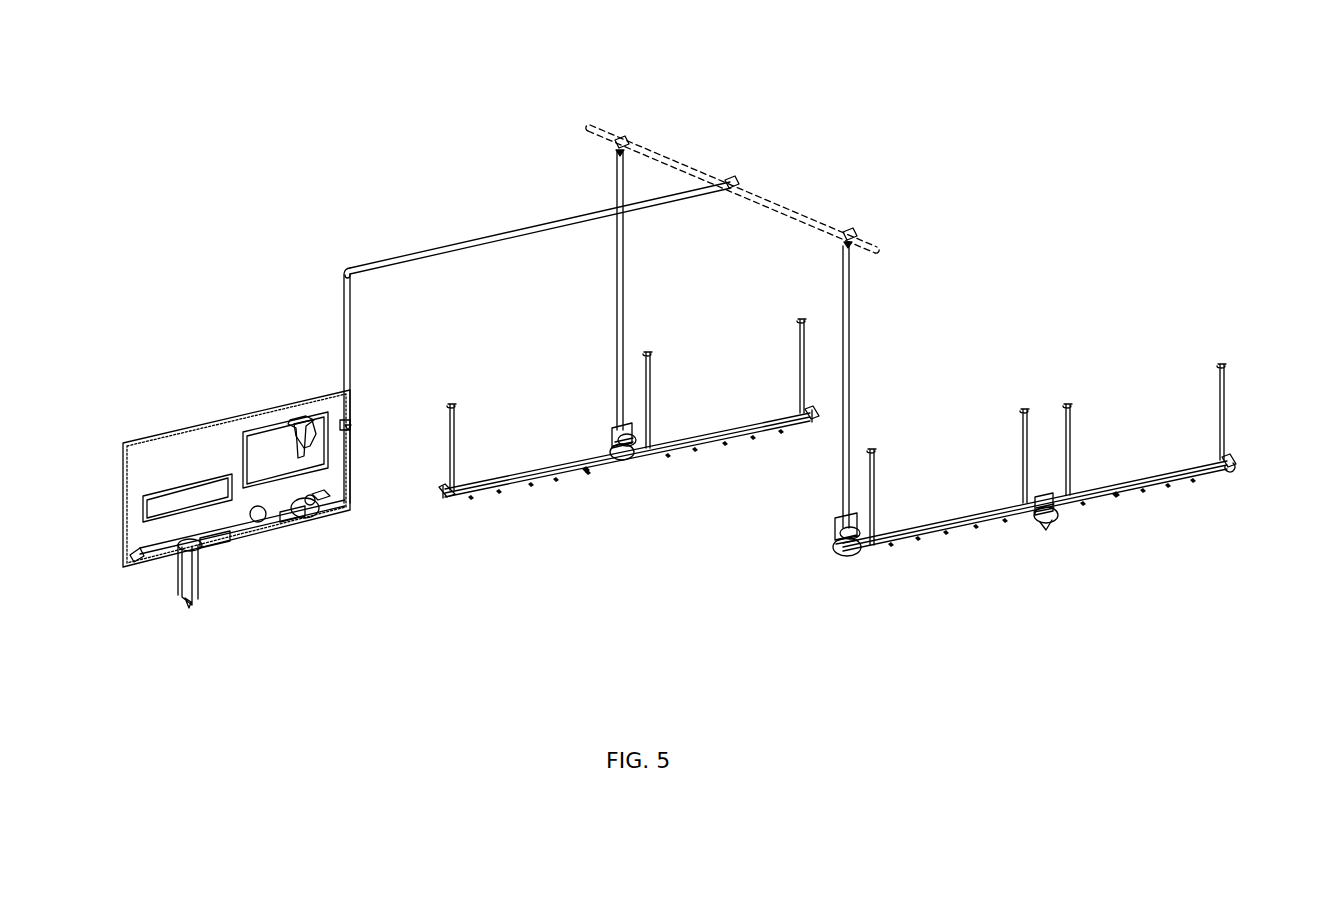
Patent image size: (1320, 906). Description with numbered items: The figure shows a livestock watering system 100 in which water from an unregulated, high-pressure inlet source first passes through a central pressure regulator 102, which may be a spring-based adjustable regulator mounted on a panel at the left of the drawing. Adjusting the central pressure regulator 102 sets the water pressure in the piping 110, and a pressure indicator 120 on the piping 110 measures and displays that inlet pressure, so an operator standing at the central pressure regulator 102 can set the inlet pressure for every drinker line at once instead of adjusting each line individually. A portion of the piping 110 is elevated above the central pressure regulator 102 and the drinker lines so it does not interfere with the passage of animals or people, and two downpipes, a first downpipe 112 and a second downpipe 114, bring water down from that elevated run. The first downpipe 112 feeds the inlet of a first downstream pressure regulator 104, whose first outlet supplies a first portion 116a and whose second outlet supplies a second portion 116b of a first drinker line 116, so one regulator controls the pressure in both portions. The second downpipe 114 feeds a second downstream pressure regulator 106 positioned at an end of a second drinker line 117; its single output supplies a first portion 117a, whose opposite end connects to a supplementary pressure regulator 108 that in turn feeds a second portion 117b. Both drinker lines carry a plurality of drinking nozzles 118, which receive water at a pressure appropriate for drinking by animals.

The livestock watering system 100 is at (226, 187).
The central pressure regulator 102 is at (307, 523).
The first downstream pressure regulator 104 is at (640, 470).
The second downstream pressure regulator 106 is at (842, 565).
The supplementary pressure regulator 108 is at (1057, 513).
The piping 110 is at (471, 242).
The first downpipe 112 is at (624, 282).
The second downpipe 114 is at (849, 302).
The first drinker line 116 is at (580, 527).
The first portion of first drinker line 116a is at (543, 481).
The second portion of first drinker line 116b is at (707, 438).
The second drinker line 117 is at (1019, 593).
The first portion of second drinker line 117a is at (933, 537).
The second portion of second drinker line 117b is at (1183, 478).
The drinking nozzles 118 is at (588, 473).
The pressure indicator 120 is at (325, 498).